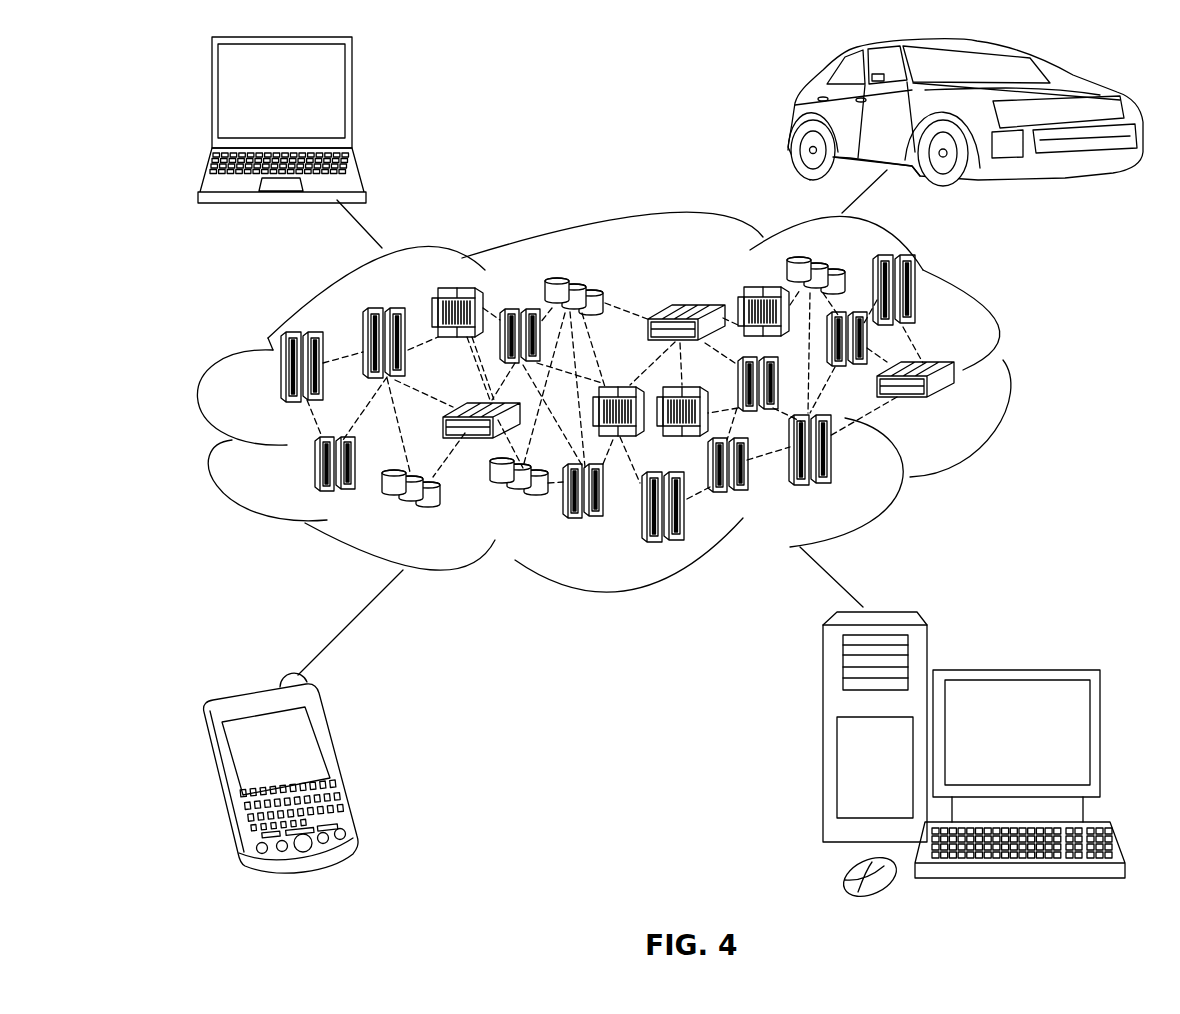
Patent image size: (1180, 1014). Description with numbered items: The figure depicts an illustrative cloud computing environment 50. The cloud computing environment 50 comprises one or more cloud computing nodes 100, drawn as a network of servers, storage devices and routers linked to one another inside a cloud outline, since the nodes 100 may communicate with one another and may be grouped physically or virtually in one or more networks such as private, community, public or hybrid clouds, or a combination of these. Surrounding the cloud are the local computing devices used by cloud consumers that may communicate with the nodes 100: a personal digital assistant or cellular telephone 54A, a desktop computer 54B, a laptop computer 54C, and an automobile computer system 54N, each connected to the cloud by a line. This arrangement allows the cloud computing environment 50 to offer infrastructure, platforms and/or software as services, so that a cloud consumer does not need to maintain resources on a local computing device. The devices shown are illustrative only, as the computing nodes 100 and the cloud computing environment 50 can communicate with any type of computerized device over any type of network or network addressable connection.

The cloud computing environment 50 is at (1016, 377).
The cloud computing nodes 100 is at (957, 407).
The personal digital assistant or cellular telephone 54A is at (342, 765).
The desktop computer 54B is at (1015, 668).
The laptop computer 54C is at (351, 100).
The automobile computer system 54N is at (792, 116).